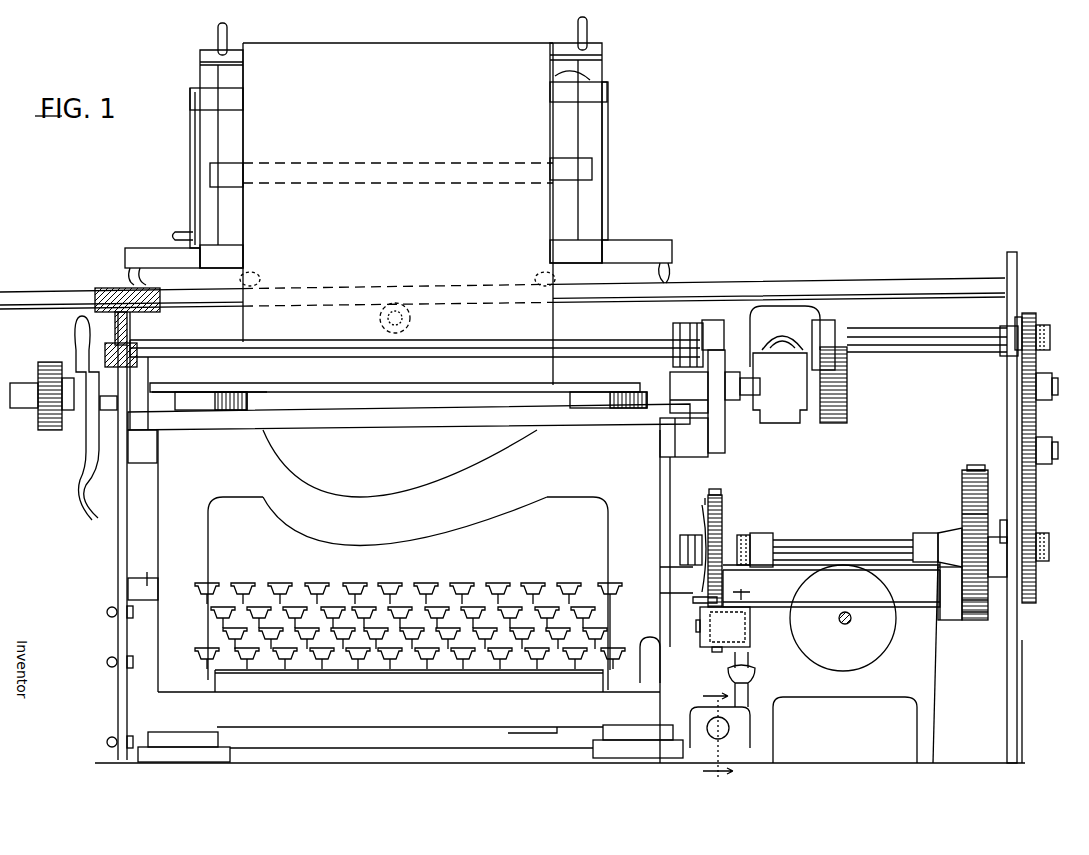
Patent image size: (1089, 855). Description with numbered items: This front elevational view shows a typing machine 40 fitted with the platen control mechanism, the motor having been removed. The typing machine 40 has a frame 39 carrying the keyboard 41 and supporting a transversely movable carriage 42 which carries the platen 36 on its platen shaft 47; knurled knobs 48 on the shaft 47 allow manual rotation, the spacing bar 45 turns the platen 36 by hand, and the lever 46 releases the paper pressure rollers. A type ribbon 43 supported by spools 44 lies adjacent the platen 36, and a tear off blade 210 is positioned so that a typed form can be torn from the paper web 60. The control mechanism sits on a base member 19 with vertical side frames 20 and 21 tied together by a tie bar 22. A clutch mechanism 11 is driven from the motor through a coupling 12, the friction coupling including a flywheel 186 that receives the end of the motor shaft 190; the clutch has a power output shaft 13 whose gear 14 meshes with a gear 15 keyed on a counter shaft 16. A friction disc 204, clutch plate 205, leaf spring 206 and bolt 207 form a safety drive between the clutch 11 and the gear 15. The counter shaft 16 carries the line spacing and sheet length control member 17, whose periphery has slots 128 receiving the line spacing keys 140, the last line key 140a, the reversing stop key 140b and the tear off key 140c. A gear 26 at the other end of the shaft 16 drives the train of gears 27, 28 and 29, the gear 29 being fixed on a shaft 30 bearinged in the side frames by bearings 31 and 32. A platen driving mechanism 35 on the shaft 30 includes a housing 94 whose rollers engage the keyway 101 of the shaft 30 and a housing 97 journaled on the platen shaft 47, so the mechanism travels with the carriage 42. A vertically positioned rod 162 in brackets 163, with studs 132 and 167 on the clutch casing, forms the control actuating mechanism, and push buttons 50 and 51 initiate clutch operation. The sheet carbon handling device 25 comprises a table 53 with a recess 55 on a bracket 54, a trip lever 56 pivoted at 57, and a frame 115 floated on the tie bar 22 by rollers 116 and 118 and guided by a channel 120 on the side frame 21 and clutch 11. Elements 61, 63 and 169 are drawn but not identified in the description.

The paper web 60 is at (390, 40).
The sheet carbon handling device 25 is at (612, 75).
The recess 55 is at (555, 77).
The table 53 is at (553, 165).
The trip lever 56 is at (192, 172).
The pivot 57 is at (175, 232).
The frame 115 is at (147, 268).
The roller 116 is at (258, 279).
The bracket 54 is at (633, 246).
The roller 118 is at (414, 320).
The tie bar 22 is at (972, 284).
The platen driving mechanism 35 is at (774, 305).
The bearing 31 is at (1021, 316).
The gear 29 is at (1038, 324).
The gear 28 is at (1040, 383).
The gear 27 is at (1038, 449).
The gear 26 is at (1037, 580).
The vertical side frame 20 is at (1017, 626).
The base member 19 is at (966, 757).
The side wall 61 is at (962, 664).
The keyway 101 is at (948, 335).
The shaft 30 is at (968, 354).
The housing 94 is at (738, 340).
The platen 36 is at (663, 398).
The platen shaft 47 is at (748, 387).
The housing 97 is at (790, 418).
The knurled knobs 48 is at (50, 430).
The carriage 42 is at (724, 452).
The spools 44 is at (282, 389).
The tear off blade 210 is at (348, 358).
The type ribbon 43 is at (413, 398).
The typing machine 40 is at (644, 491).
The frame 39 is at (636, 547).
The keyboard 41 is at (570, 582).
The lever 46 is at (76, 338).
The bearing 32 is at (128, 341).
The spacing bar 45 is at (84, 479).
The channel 120 is at (940, 610).
The vertical side frame 21 is at (118, 632).
The friction disc 204 is at (710, 483).
The clutch plate 205 is at (708, 505).
The leaf spring 206 is at (703, 525).
The bolt 207 is at (692, 534).
The gear 15 is at (722, 510).
The stud 167 is at (763, 530).
The brackets 163 is at (740, 583).
The counter shaft 16 is at (830, 540).
The line spacing and sheet length control member 17 is at (981, 470).
The key 140b is at (983, 470).
The line spacing keys 140 is at (962, 488).
The slots 128 is at (962, 514).
The stud 132 is at (928, 543).
The clutch mechanism 11 is at (922, 587).
The bar 63 is at (790, 584).
The rod 162 is at (752, 597).
The gear 14 is at (693, 598).
The power output shaft 13 is at (698, 628).
The motor shaft 190 is at (840, 622).
The coupling 12 is at (878, 650).
The flywheel 186 is at (850, 668).
The tear off key 140c is at (948, 620).
The key 140a is at (980, 622).
The post 169 is at (692, 717).
The push button 51 is at (756, 675).
The push button 50 is at (730, 728).